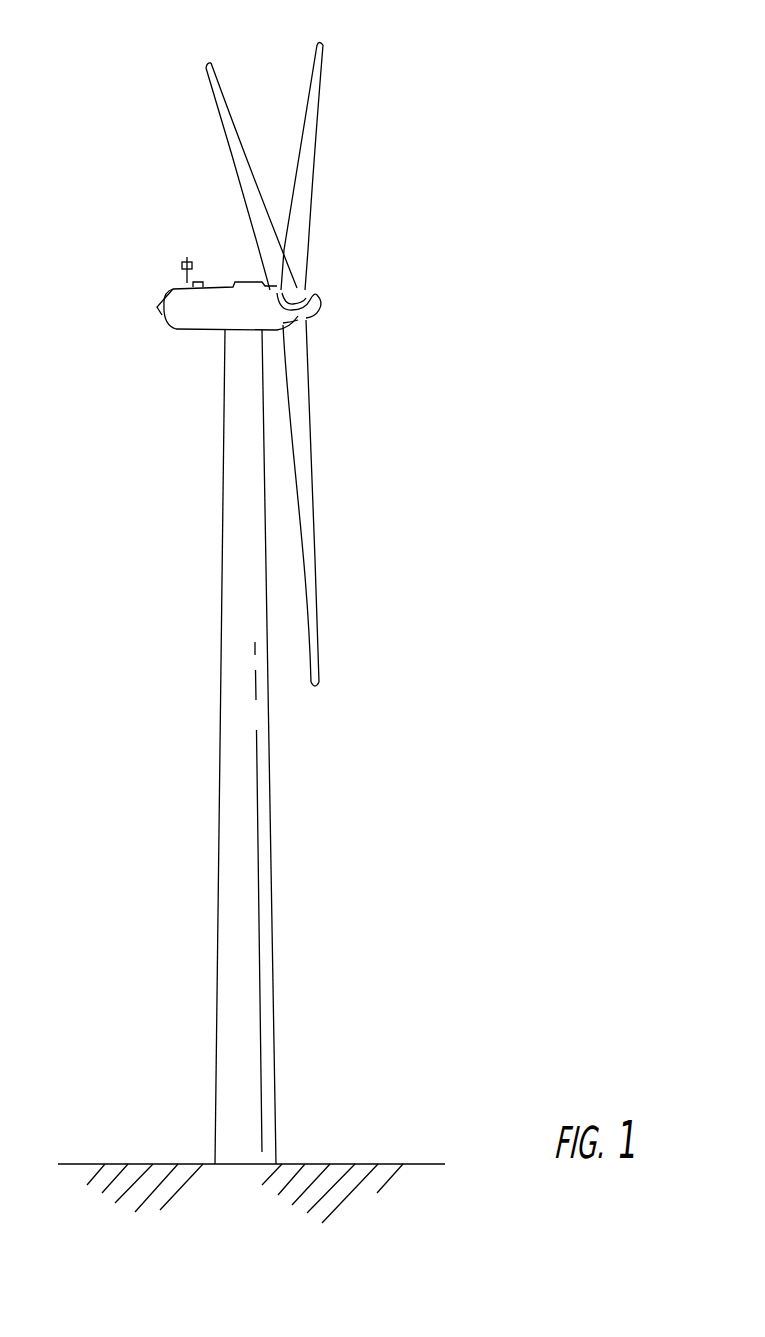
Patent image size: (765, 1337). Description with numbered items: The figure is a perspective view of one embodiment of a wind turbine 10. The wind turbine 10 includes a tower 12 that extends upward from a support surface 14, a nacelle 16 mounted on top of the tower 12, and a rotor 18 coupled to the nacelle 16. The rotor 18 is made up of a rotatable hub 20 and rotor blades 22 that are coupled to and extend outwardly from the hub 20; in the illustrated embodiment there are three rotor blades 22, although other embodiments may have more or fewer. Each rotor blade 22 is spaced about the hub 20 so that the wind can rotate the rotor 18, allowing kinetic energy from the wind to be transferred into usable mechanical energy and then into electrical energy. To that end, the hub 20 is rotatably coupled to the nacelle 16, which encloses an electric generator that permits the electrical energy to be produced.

The wind turbine 10 is at (412, 127).
The tower 12 is at (232, 863).
The support surface 14 is at (142, 1164).
The nacelle 16 is at (198, 332).
The rotor 18 is at (325, 272).
The rotatable hub 20 is at (313, 312).
The rotor blade 22 is at (313, 85).